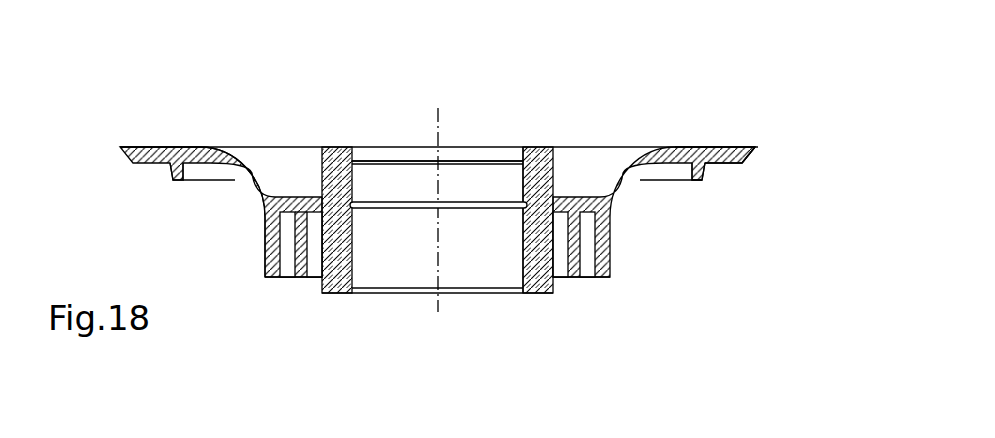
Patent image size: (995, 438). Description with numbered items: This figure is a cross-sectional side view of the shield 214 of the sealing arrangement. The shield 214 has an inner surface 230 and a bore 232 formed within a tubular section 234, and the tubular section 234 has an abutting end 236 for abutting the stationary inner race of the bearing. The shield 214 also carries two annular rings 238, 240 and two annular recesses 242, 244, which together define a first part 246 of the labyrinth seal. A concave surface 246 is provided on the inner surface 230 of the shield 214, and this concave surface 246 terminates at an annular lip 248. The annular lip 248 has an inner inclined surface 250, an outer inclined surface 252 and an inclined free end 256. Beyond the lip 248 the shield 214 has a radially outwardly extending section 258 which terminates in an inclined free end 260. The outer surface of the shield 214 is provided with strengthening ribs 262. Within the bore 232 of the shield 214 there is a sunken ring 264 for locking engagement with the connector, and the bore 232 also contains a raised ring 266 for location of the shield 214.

The shield 214 is at (640, 107).
The inner surface 230 is at (248, 195).
The bore 232 is at (482, 263).
The tubular section 234 is at (540, 272).
The abutting end 236 is at (537, 293).
The annular ring 238 is at (265, 263).
The annular ring 240 is at (300, 278).
The annular recess 242 is at (288, 278).
The annular recess 244 is at (308, 280).
The concave surface 246 is at (240, 188).
The annular lip 248 is at (168, 178).
The inner inclined surface 250 is at (197, 166).
The outer inclined surface 252 is at (730, 166).
The inclined free end 256 is at (703, 181).
The radially outwardly extending section 258 is at (732, 166).
The inclined free end 260 is at (752, 157).
The strengthening ribs 262 is at (277, 162).
The sunken ring 264 is at (352, 204).
The raised ring 266 is at (357, 152).